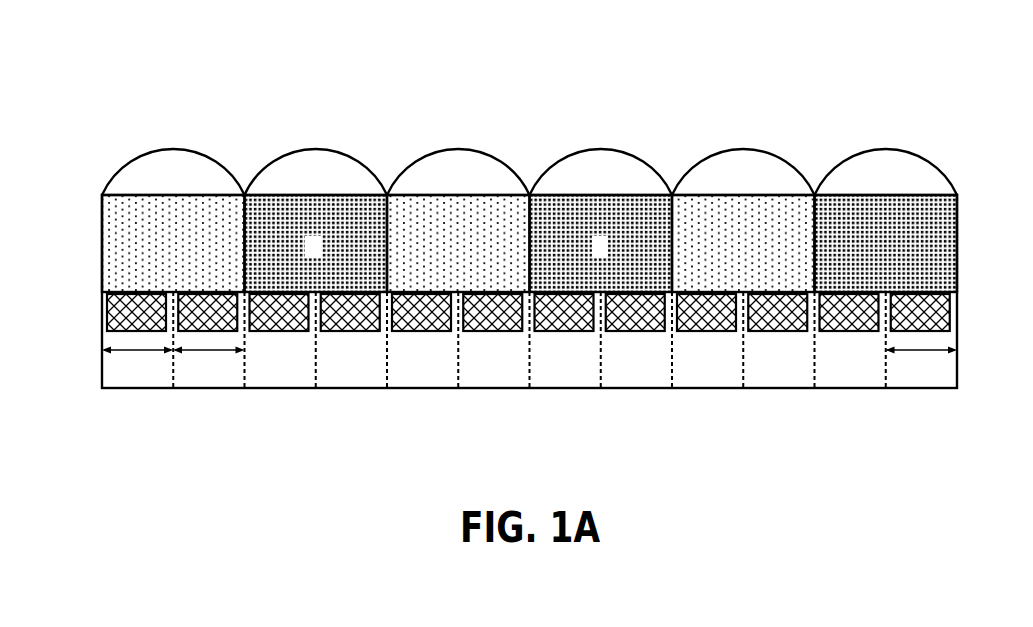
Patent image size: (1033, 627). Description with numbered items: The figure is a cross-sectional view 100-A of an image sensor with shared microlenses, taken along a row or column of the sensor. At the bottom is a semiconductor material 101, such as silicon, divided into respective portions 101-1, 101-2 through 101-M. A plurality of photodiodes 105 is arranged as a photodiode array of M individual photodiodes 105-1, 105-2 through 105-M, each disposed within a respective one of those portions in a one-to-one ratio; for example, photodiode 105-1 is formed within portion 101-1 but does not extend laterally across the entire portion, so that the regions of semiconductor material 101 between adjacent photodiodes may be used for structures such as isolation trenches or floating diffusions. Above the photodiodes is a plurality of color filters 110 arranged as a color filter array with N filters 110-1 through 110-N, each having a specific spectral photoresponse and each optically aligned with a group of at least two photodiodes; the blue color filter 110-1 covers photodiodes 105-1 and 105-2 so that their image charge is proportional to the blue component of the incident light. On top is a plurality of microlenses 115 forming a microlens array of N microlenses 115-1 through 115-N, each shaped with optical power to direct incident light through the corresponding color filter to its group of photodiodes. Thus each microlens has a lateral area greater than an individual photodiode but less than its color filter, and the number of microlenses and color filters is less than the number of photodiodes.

The cross-sectional view 100-A is at (93, 70).
The semiconductor material 101 is at (529, 340).
The respective portion of semiconductor material 101-1 is at (137, 366).
The respective portion of semiconductor material 101-2 is at (208, 366).
The respective portion of semiconductor material 101-M is at (921, 366).
The plurality of photodiodes 105 is at (95, 292).
The photodiode 105-1 is at (136, 312).
The photodiode 105-2 is at (207, 312).
The photodiode 105-M is at (920, 312).
The plurality of color filters 110 is at (95, 195).
The blue color filter 110-1 is at (173, 243).
The color filter 110-N is at (886, 243).
The plurality of microlenses 115 is at (95, 147).
The microlens 115-1 is at (173, 172).
The microlens 115-N is at (886, 172).